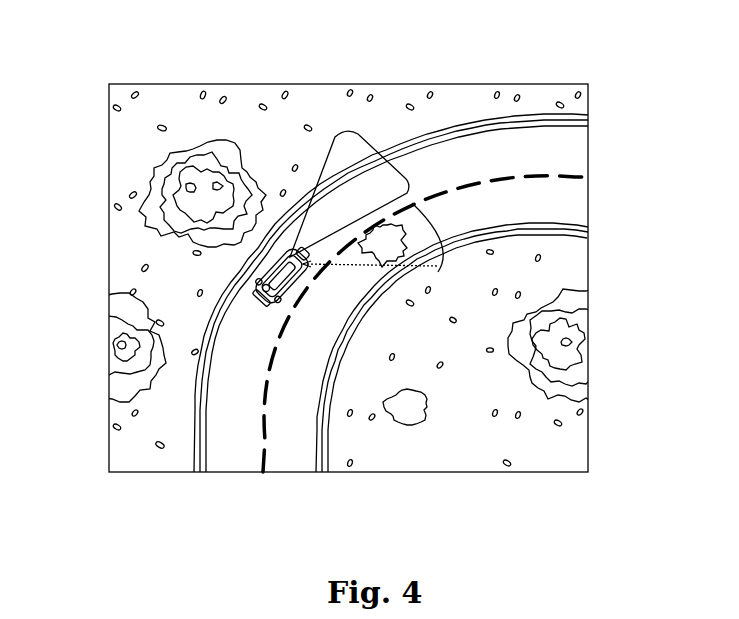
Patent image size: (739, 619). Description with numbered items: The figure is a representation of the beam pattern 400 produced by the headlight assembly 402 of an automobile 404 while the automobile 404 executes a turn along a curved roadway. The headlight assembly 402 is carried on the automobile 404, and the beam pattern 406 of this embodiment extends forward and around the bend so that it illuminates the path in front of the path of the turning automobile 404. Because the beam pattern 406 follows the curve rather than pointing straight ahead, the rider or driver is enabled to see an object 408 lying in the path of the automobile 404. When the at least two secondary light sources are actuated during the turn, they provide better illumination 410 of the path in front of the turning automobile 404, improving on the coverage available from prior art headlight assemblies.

The beam pattern 400 is at (340, 244).
The headlight assembly 402 is at (278, 261).
The automobile 404 is at (252, 290).
The beam pattern 406 is at (307, 182).
The object 408 is at (415, 249).
The illumination 410 is at (434, 215).